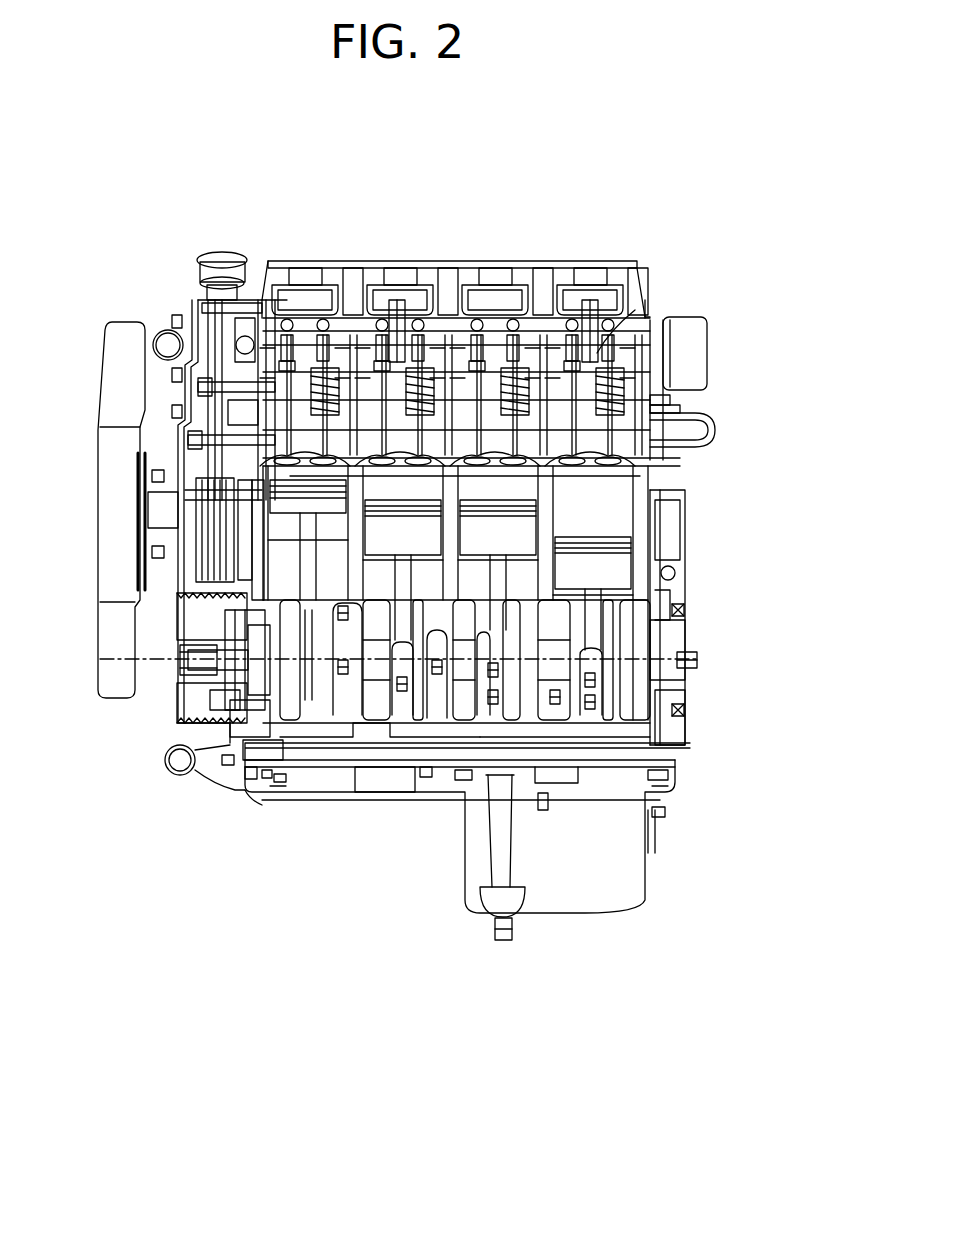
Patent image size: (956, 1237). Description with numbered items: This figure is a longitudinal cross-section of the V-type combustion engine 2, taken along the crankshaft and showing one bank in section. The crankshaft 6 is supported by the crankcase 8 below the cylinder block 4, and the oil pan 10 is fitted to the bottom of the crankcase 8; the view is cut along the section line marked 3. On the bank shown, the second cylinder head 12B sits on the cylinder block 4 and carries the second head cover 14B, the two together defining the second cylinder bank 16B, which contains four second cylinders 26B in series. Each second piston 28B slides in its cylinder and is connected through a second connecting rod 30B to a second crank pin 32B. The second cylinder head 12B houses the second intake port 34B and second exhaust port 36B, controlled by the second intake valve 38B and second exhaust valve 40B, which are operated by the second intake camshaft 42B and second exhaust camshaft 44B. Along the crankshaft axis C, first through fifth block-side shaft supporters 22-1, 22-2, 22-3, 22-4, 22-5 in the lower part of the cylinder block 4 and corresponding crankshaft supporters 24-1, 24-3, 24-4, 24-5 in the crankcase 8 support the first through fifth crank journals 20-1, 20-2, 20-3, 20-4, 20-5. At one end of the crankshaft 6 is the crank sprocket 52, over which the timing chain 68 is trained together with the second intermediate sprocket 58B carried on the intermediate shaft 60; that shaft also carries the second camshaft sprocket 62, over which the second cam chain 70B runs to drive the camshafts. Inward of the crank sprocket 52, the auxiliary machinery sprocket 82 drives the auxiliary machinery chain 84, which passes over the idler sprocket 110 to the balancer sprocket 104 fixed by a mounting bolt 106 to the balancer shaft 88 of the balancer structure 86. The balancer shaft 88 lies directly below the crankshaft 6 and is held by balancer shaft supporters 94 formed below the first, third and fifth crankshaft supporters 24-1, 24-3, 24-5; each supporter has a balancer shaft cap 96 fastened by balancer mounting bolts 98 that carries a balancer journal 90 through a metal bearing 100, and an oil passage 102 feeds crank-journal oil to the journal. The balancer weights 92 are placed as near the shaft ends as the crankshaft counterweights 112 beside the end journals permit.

The V-type combustion engine 2 is at (648, 172).
The section line 3 is at (490, 158).
The cylinder block 4 is at (686, 521).
The crankshaft 6 is at (684, 606).
The crankcase 8 is at (683, 700).
The oil pan 10 is at (588, 915).
The second cylinder head 12B is at (681, 397).
The second head cover 14B is at (510, 262).
The second cylinder bank 16B is at (683, 300).
The first crank journal 20-1 is at (262, 656).
The second crank journal 20-2 is at (340, 300).
The third crank journal 20-3 is at (432, 300).
The fourth crank journal 20-4 is at (566, 300).
The fifth crank journal 20-5 is at (668, 642).
The first block-side shaft supporter 22-1 is at (265, 620).
The second block-side shaft supporter 22-2 is at (383, 300).
The third block-side shaft supporter 22-3 is at (462, 320).
The fourth block-side shaft supporter 22-4 is at (606, 330).
The fifth block-side shaft supporter 22-5 is at (660, 592).
The first crankshaft supporter 24-1 is at (212, 730).
The third crankshaft supporter 24-3 is at (410, 745).
The fourth crankshaft supporter 24-4 is at (628, 765).
The fifth crankshaft supporter 24-5 is at (677, 712).
The second cylinder 26B is at (230, 555).
The second piston 28B is at (220, 520).
The second connecting rod 30B is at (655, 560).
The second crank pin 32B is at (245, 600).
The second intake port 34B is at (665, 420).
The second exhaust port 36B is at (200, 300).
The second intake valve 38B is at (712, 436).
The second exhaust valve 40B is at (240, 290).
The second intake camshaft 42B is at (165, 325).
The second exhaust camshaft 44B is at (306, 288).
The crank sprocket 52 is at (200, 640).
The second intermediate sprocket 58B is at (142, 362).
The intermediate shaft 60 is at (188, 440).
The second camshaft sprocket 62 is at (198, 388).
The timing chain 68 is at (178, 680).
The second cam chain 70B is at (215, 490).
The auxiliary machinery sprocket 82 is at (200, 718).
The auxiliary machinery chain 84 is at (265, 805).
The balancer structure 86 is at (648, 820).
The balancer shaft 88 is at (375, 762).
The balancer journal 90 is at (250, 790).
The balancer weight 92 is at (323, 752).
The balancer shaft supporter 94 is at (240, 755).
The balancer shaft cap 96 is at (268, 762).
The balancer mounting bolt 98 is at (278, 772).
The metal bearing 100 is at (283, 775).
The oil passage 102 is at (225, 760).
The balancer sprocket 104 is at (230, 810).
The mounting bolt 106 is at (205, 768).
The idler sprocket 110 is at (695, 660).
The crankshaft counterweight 112 is at (290, 755).
The crankshaft axis C is at (100, 659).